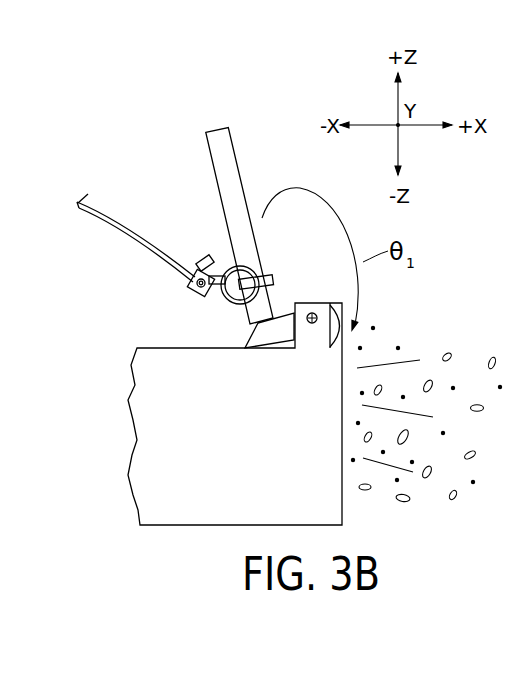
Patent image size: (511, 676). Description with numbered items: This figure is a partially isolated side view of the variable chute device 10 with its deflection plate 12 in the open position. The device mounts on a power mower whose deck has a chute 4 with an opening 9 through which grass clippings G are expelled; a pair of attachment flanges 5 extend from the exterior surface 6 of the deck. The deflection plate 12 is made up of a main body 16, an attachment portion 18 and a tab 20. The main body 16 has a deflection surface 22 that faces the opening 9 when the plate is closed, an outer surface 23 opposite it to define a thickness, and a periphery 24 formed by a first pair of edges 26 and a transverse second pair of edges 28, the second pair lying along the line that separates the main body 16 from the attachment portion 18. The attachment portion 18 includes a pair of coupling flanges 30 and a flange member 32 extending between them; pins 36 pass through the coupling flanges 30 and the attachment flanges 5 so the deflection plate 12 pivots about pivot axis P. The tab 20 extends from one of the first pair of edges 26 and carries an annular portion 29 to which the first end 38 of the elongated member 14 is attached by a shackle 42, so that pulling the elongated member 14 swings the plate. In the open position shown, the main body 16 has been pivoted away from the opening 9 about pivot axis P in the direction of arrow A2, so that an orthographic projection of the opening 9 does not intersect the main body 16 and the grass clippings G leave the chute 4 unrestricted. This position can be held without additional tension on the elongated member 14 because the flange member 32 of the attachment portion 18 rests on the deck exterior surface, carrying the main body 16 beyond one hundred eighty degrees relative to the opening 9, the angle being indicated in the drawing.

The variable chute device 10 is at (176, 118).
The deflection plate 12 is at (233, 115).
The elongated member 14 is at (109, 211).
The main body 16 is at (238, 153).
The attachment portion 18 is at (250, 348).
The tab 20 is at (274, 276).
The deflection surface 22 is at (256, 190).
The outer surface 23 is at (223, 200).
The periphery 24 is at (222, 187).
The first pair of edges 26 is at (212, 143).
The second pair of edges 28 is at (213, 127).
The annular portion 29 is at (222, 300).
The coupling flanges 30 is at (290, 334).
The flange member 32 is at (267, 352).
The pins 36 is at (312, 325).
The first end 38 is at (197, 275).
The shackle 42 is at (206, 258).
The chute 4 is at (140, 340).
The attachment flanges 5 is at (333, 302).
The exterior surface 6 is at (168, 348).
The opening 9 is at (364, 357).
The pivot axis P is at (298, 302).
The arrow A2 is at (347, 302).
The grass clippings G is at (362, 440).